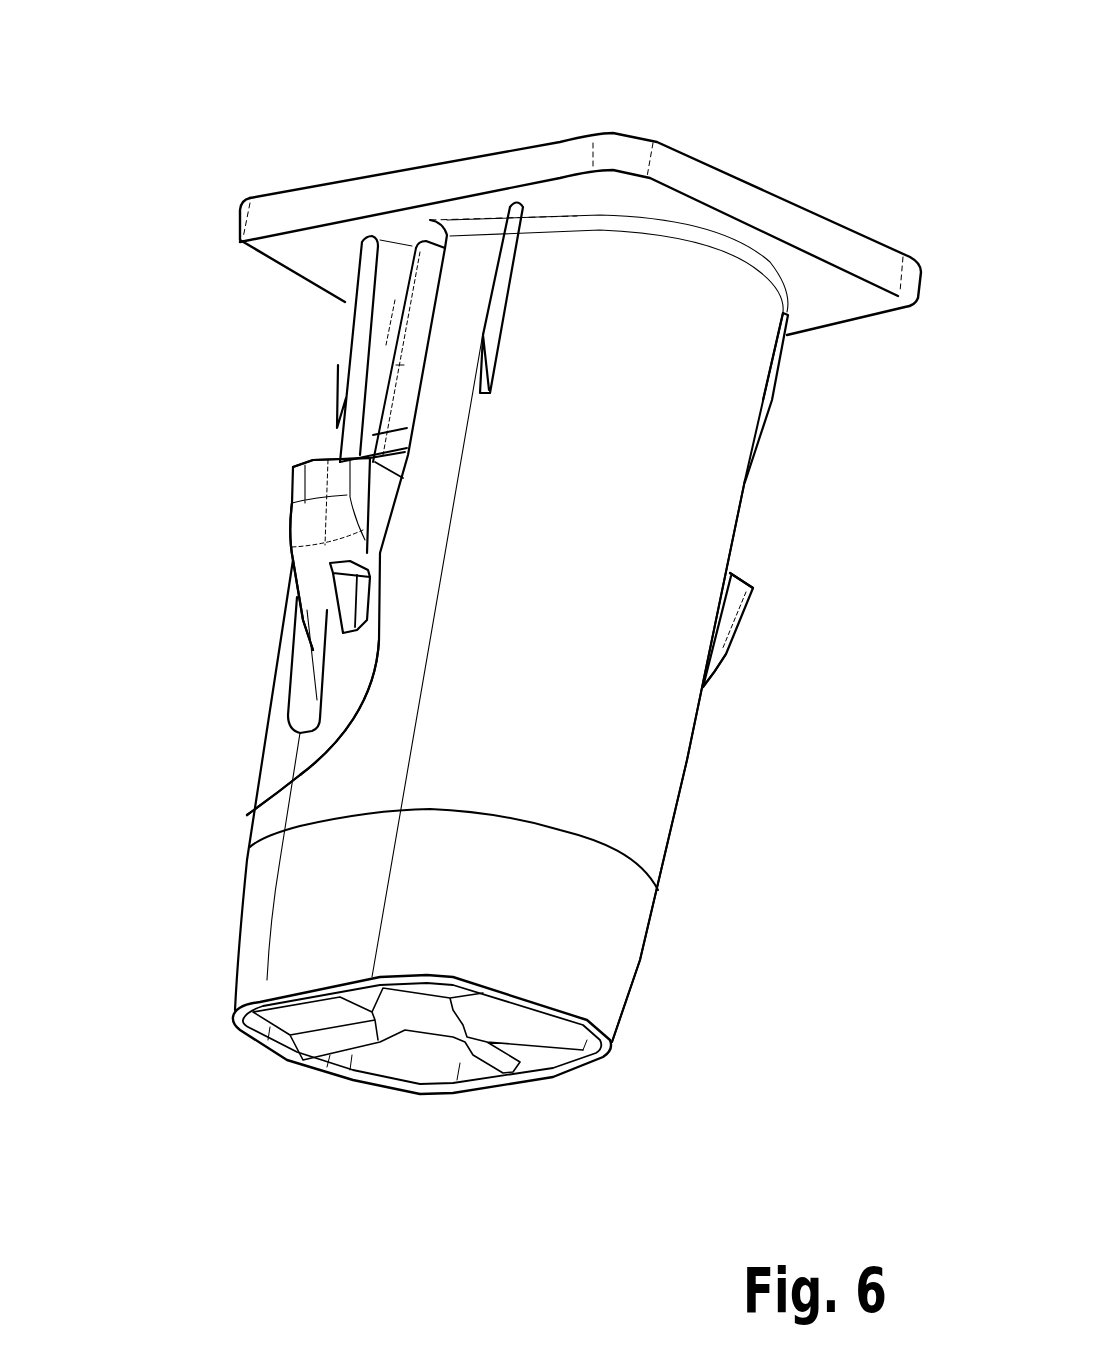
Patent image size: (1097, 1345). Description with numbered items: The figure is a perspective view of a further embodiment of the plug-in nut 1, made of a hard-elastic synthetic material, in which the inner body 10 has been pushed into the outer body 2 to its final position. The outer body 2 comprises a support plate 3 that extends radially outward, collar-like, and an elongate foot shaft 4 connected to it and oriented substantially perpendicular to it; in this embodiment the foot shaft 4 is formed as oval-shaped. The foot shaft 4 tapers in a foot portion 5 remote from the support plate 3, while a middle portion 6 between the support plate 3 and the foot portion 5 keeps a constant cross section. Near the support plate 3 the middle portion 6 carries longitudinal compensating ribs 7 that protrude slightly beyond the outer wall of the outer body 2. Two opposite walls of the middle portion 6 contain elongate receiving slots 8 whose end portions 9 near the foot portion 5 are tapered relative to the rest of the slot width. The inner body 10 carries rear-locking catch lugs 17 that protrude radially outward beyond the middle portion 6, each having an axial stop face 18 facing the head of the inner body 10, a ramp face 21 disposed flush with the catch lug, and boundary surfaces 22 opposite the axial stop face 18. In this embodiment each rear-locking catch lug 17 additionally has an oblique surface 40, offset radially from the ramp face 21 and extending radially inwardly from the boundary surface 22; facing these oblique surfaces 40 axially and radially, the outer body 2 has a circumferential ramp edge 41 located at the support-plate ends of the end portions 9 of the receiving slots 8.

The plug-in nut 1 is at (184, 143).
The outer body 2 is at (727, 917).
The support plate 3 is at (783, 222).
The foot shaft 4 is at (632, 763).
The foot portion 5 is at (590, 950).
The middle portion 6 is at (707, 500).
The compensating ribs 7 is at (363, 268).
The receiving slots 8 is at (411, 337).
The end portions 9 is at (300, 705).
The inner body 10 is at (404, 365).
The rear-locking catch lugs 17 is at (316, 483).
The axial stop face 18 is at (310, 462).
The ramp face 21 is at (313, 610).
The boundary surfaces 22 is at (345, 575).
The oblique surface 40 is at (247, 815).
The ramp edge 41 is at (355, 627).